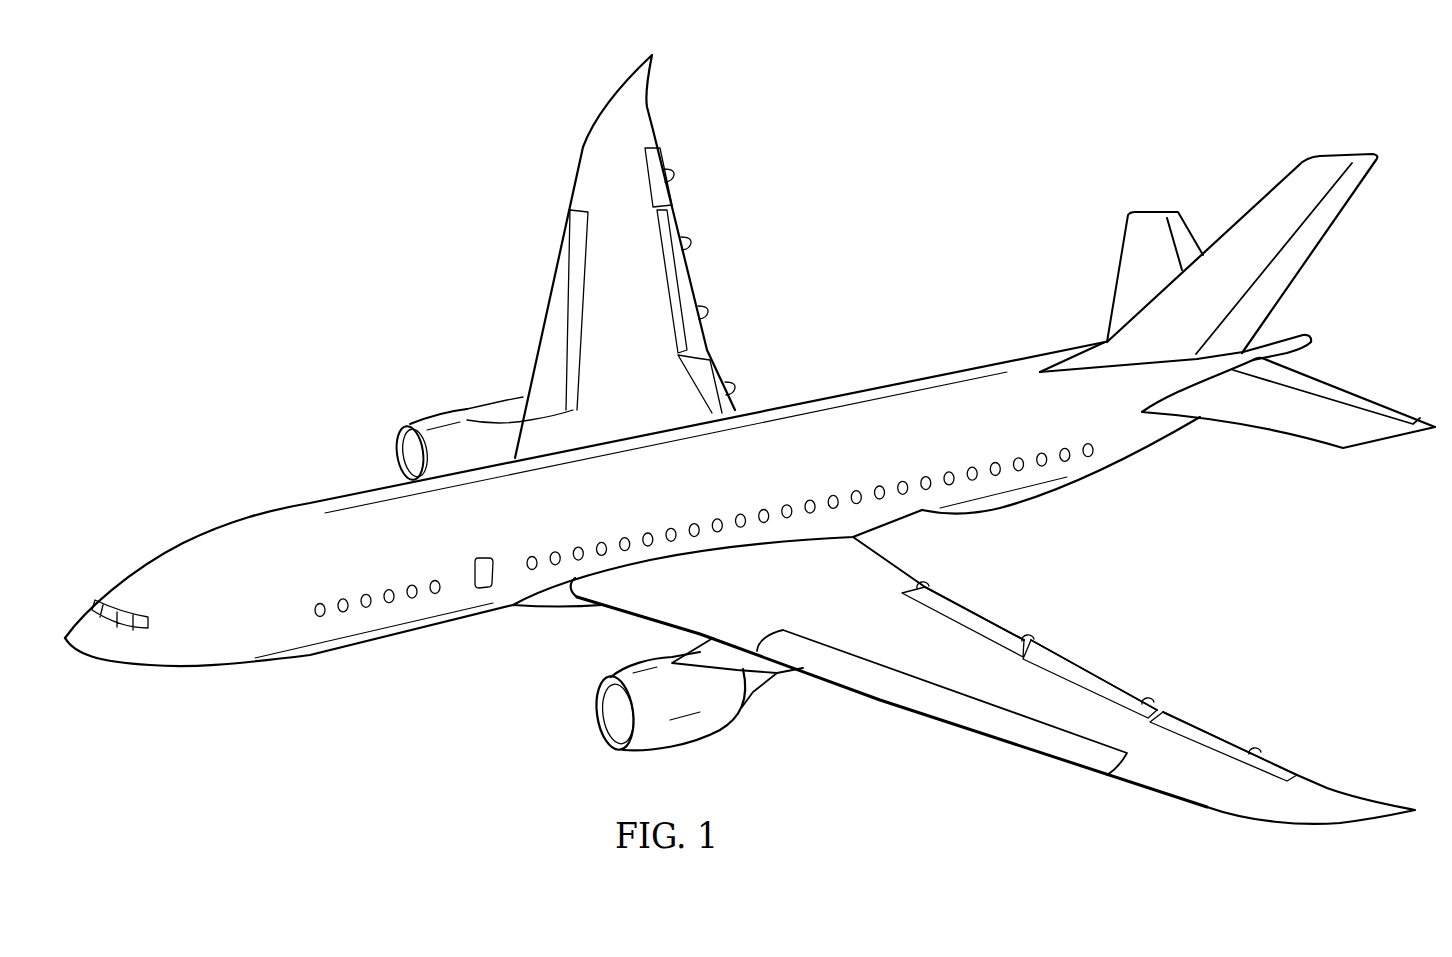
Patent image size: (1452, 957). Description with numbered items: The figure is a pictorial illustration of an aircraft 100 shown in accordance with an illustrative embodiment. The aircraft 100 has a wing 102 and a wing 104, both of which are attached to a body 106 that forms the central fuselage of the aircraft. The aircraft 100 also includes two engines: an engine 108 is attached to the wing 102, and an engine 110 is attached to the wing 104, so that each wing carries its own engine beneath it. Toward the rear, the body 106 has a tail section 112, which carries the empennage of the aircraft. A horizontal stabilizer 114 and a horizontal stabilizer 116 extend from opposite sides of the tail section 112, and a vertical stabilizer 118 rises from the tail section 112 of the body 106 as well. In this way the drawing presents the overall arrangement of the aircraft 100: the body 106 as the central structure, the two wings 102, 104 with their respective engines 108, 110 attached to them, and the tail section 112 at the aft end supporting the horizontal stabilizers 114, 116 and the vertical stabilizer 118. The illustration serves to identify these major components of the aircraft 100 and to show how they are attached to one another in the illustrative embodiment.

The aircraft 100 is at (345, 207).
The wing 102 is at (583, 147).
The wing 104 is at (1293, 823).
The body 106 is at (252, 518).
The engine 108 is at (438, 410).
The engine 110 is at (687, 740).
The tail section 112 is at (1186, 485).
The horizontal stabilizer 114 is at (1118, 272).
The horizontal stabilizer 116 is at (1293, 437).
The vertical stabilizer 118 is at (1320, 246).